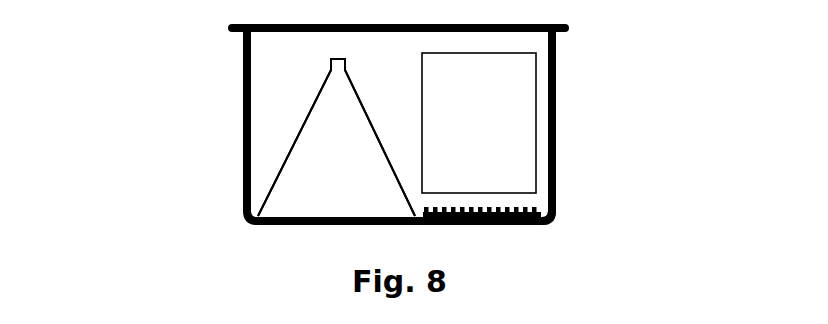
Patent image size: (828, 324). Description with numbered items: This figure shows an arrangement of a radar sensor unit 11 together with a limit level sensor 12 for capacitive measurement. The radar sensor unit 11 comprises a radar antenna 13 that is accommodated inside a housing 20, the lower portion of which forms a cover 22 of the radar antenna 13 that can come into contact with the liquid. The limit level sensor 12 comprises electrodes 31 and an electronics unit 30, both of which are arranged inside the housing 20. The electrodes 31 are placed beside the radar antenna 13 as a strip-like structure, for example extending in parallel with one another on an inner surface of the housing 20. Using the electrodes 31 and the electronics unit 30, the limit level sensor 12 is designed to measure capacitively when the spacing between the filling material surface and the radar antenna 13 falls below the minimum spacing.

The housing 20 is at (242, 70).
The cover 22 is at (302, 226).
The radar sensor unit 11 is at (282, 133).
The radar antenna 13 is at (316, 170).
The electronics unit 30 is at (505, 87).
The electrodes 31 is at (498, 192).
The limit level sensor 12 is at (530, 200).